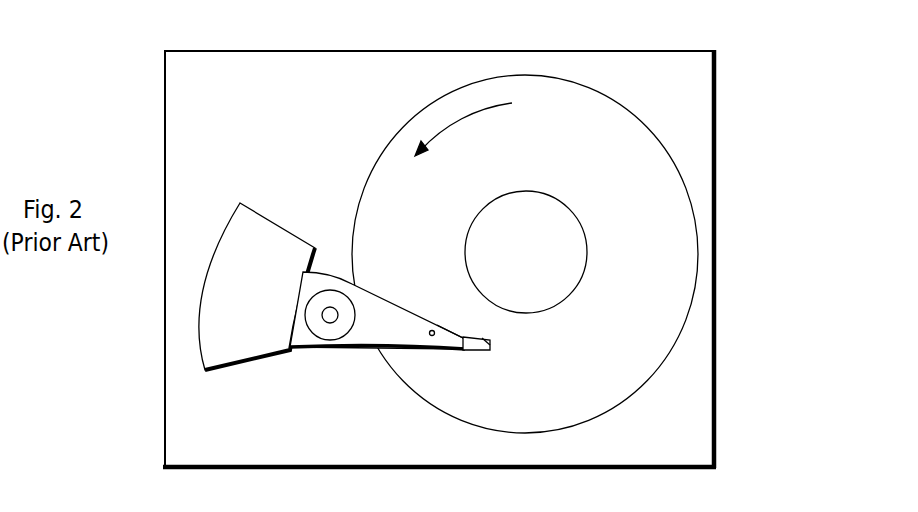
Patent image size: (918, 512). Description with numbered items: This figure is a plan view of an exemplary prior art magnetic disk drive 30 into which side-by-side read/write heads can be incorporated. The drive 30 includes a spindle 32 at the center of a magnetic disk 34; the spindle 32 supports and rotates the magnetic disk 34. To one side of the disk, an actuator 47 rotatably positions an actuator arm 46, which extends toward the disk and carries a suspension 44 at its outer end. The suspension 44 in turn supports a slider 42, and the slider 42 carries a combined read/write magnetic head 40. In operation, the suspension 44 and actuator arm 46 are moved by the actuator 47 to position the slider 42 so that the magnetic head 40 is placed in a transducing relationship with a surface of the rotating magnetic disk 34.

The magnetic disk drive 30 is at (722, 60).
The spindle 32 is at (546, 194).
The magnetic disk 34 is at (638, 263).
The combined read/write magnetic head 40 is at (490, 354).
The slider 42 is at (483, 340).
The suspension 44 is at (448, 350).
The actuator arm 46 is at (374, 294).
The actuator 47 is at (270, 222).